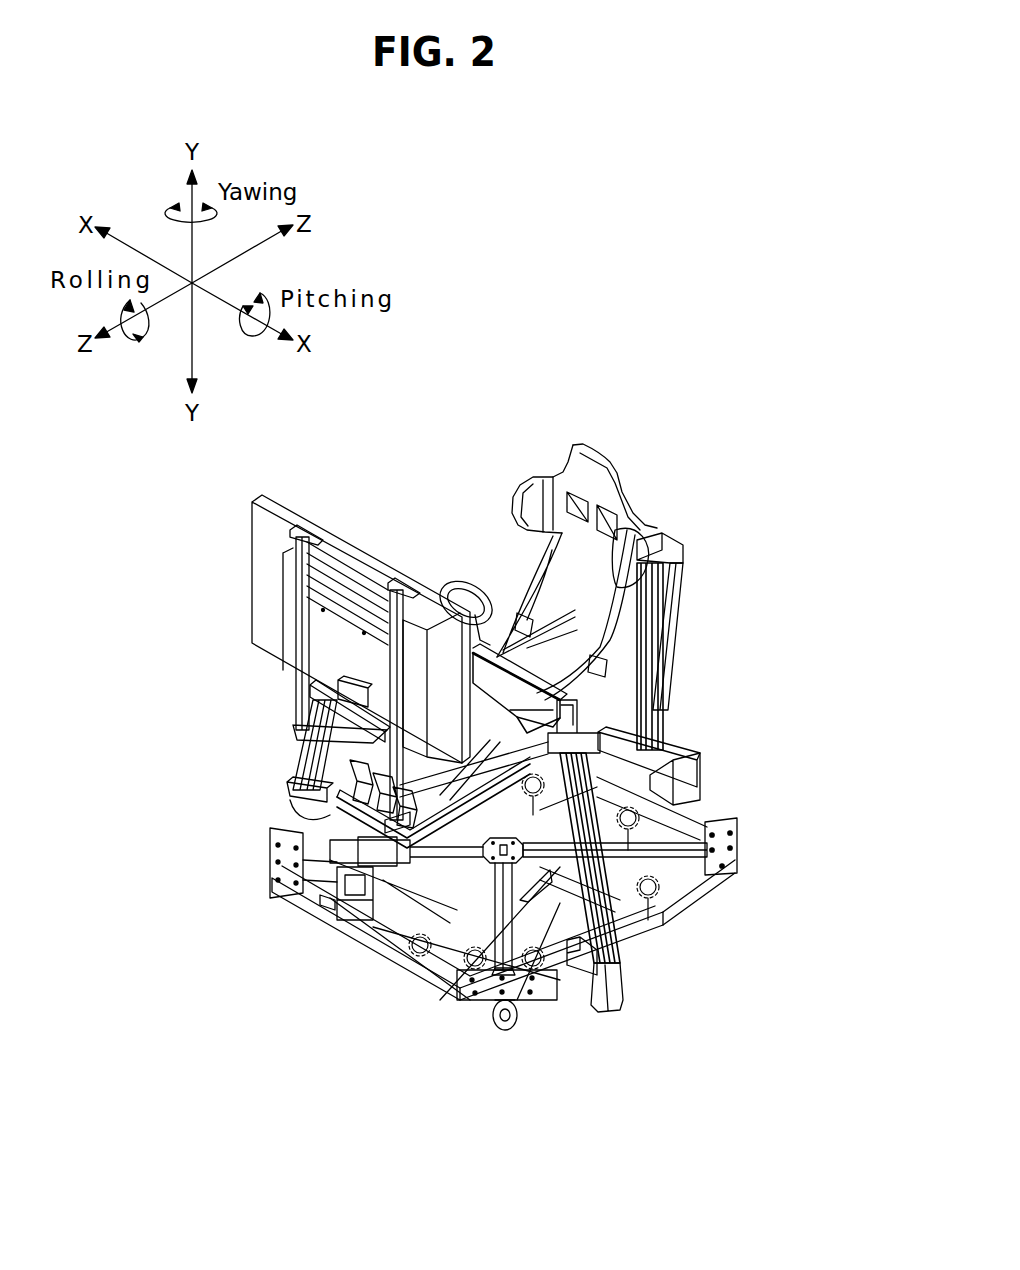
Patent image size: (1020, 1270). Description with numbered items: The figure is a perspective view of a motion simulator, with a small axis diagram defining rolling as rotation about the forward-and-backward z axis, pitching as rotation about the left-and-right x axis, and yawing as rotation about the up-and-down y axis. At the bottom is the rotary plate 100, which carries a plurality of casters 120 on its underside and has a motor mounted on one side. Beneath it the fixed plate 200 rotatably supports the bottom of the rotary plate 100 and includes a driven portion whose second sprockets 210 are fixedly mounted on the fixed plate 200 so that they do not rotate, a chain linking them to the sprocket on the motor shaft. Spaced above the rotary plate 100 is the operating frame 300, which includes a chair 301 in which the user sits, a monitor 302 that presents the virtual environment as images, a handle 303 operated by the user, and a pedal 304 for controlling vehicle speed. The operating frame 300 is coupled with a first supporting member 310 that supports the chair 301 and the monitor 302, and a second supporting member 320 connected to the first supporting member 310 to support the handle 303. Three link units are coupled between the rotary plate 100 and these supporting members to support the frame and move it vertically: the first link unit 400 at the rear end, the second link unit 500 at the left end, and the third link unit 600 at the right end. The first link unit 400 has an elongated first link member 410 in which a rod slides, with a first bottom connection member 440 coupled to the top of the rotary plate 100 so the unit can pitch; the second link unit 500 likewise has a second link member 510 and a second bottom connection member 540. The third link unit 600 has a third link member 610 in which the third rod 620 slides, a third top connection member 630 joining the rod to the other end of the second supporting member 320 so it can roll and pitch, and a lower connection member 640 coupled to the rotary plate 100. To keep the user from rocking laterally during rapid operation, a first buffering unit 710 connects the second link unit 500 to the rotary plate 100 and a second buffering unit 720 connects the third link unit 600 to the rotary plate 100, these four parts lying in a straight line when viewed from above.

The rotary plate 100 is at (377, 947).
The casters 120 is at (487, 1020).
The fixed plate 200 is at (440, 903).
The second sprockets 210 is at (563, 1007).
The operating frame 300 is at (330, 876).
The chair 301 is at (600, 482).
The monitor 302 is at (262, 515).
The handle 303 is at (448, 585).
The pedal 304 is at (300, 833).
The first supporting member 310 is at (675, 592).
The second supporting member 320 is at (502, 687).
The first link unit 400 is at (685, 684).
The first link member 410 is at (660, 705).
The first bottom connection member 440 is at (690, 790).
The second link unit 500 is at (188, 770).
The second link member 510 is at (305, 742).
The second bottom connection member 540 is at (293, 798).
The third link unit 600 is at (687, 918).
The third link member 610 is at (633, 947).
The third rod 620 is at (600, 770).
The third top connection member 630 is at (713, 828).
The third top connection member 640 is at (590, 987).
The first buffering unit 710 is at (420, 882).
The second buffering unit 720 is at (495, 880).